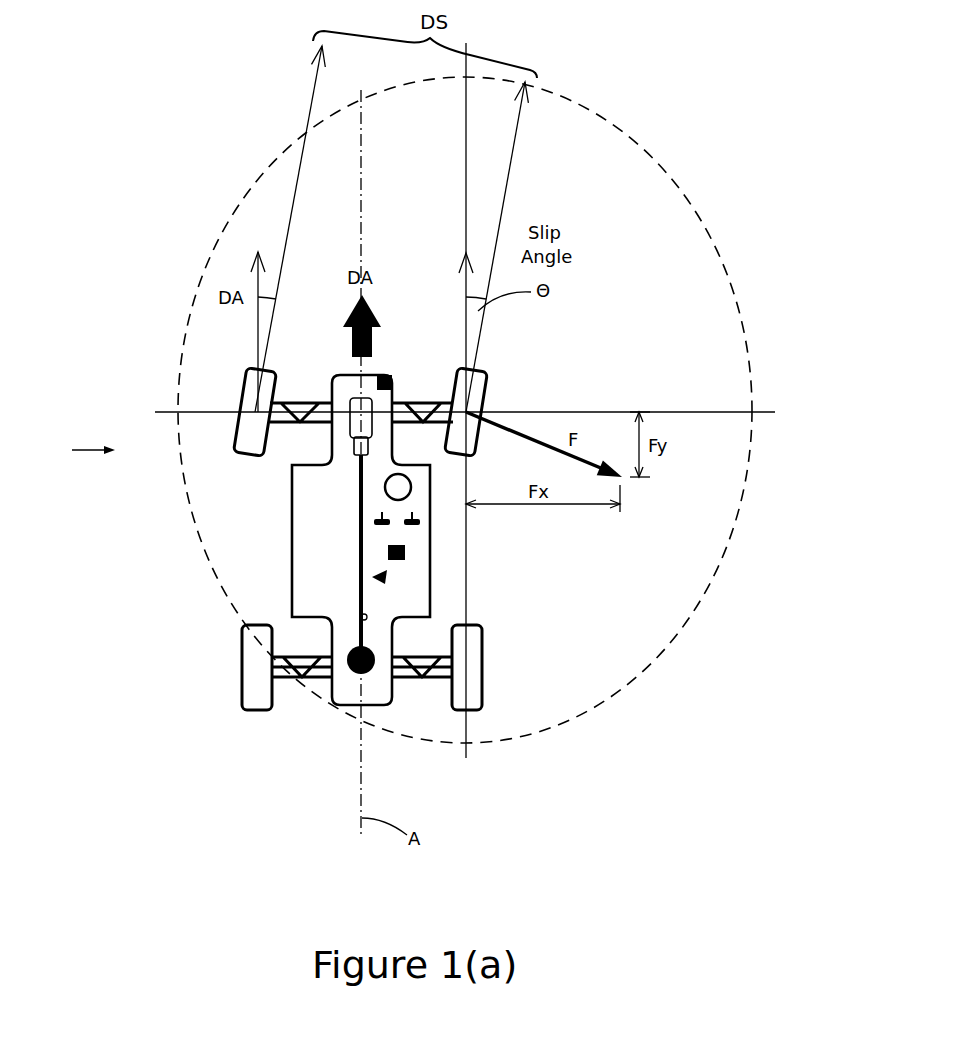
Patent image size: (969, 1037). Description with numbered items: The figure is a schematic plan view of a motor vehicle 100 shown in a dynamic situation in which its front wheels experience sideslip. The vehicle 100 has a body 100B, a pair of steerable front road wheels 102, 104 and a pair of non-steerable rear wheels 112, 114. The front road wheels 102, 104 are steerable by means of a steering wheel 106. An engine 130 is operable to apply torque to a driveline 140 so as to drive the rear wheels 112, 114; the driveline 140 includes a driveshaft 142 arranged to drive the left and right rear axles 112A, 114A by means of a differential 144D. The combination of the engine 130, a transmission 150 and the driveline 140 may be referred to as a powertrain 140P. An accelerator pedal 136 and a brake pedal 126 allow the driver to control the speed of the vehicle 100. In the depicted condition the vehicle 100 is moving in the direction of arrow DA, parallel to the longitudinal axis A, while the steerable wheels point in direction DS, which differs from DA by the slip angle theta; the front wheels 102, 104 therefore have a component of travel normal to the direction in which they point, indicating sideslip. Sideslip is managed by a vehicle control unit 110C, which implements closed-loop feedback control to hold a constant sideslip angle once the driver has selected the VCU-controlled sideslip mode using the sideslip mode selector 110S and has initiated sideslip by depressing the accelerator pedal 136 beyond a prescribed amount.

The vehicle 100 is at (97, 658).
The body 100B is at (292, 528).
The front road wheel 102 is at (243, 398).
The front road wheel 104 is at (487, 397).
The steering wheel 106 is at (400, 474).
The vehicle control unit 110C is at (385, 375).
The VCU-controlled sideslip mode selector 110S is at (406, 552).
The rear wheel 112 is at (242, 700).
The left rear axle 112A is at (297, 672).
The rear wheel 114 is at (482, 697).
The right rear axle 114A is at (428, 672).
The brake pedal 126 is at (361, 534).
The engine 130 is at (350, 425).
The accelerator pedal 136 is at (422, 521).
The driveline 140 is at (385, 577).
The powertrain 140P is at (66, 450).
The driveshaft 142 is at (367, 619).
The differential 144D is at (359, 670).
The transmission 150 is at (353, 452).